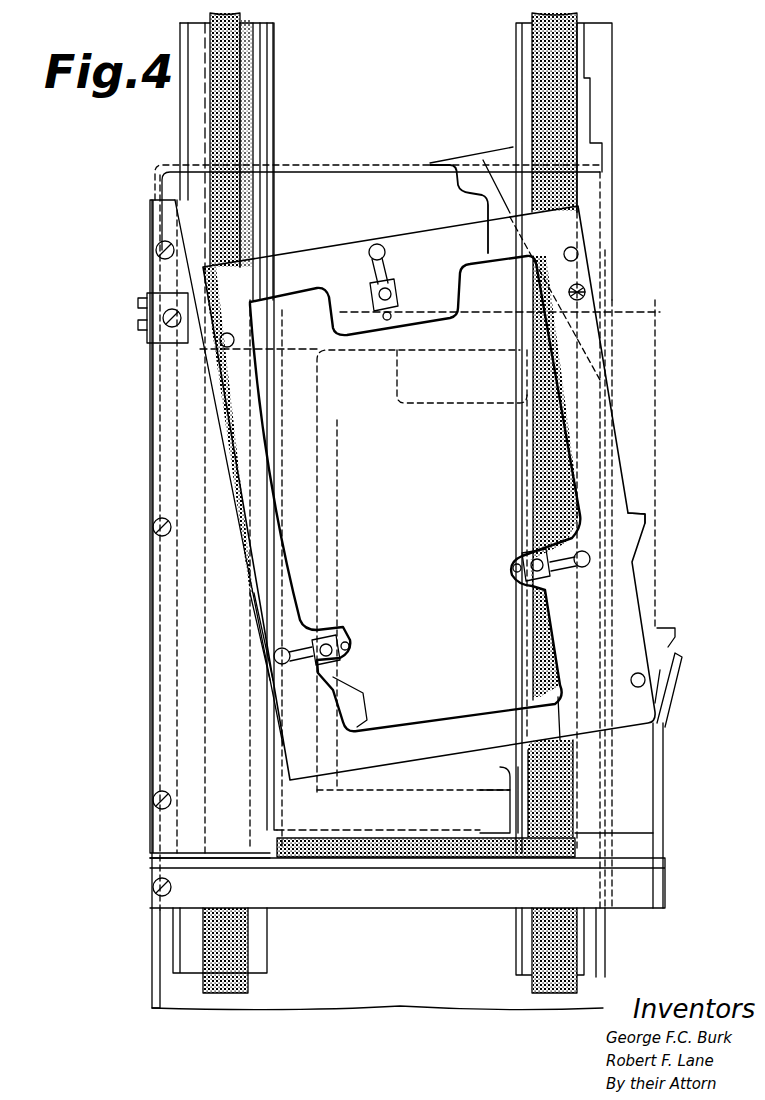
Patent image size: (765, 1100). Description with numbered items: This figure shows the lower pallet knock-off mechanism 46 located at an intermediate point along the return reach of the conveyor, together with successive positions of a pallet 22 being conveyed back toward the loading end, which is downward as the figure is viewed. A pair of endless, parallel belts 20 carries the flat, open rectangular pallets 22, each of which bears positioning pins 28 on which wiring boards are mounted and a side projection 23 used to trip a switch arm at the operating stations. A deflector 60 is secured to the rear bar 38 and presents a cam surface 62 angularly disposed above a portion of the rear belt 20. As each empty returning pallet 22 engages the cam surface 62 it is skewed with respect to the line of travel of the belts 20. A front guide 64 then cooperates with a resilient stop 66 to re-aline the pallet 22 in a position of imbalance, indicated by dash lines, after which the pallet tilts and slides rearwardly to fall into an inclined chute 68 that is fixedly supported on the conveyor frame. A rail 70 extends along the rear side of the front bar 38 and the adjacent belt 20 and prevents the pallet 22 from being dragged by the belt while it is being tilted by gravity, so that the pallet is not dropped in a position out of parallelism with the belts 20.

The endless parallel belts 20 is at (250, 84).
The pallet 22 is at (637, 582).
The side projection 23 is at (645, 520).
The positioning pins 28 is at (387, 320).
The rear bar 38 is at (270, 955).
The lower pallet knock-off mechanism 46 is at (133, 423).
The deflector 60 is at (148, 618).
The cam surface 62 is at (225, 455).
The front guide 64 is at (667, 787).
The resilient stop 66 is at (340, 847).
The inclined chute 68 is at (318, 1010).
The rail 70 is at (500, 767).